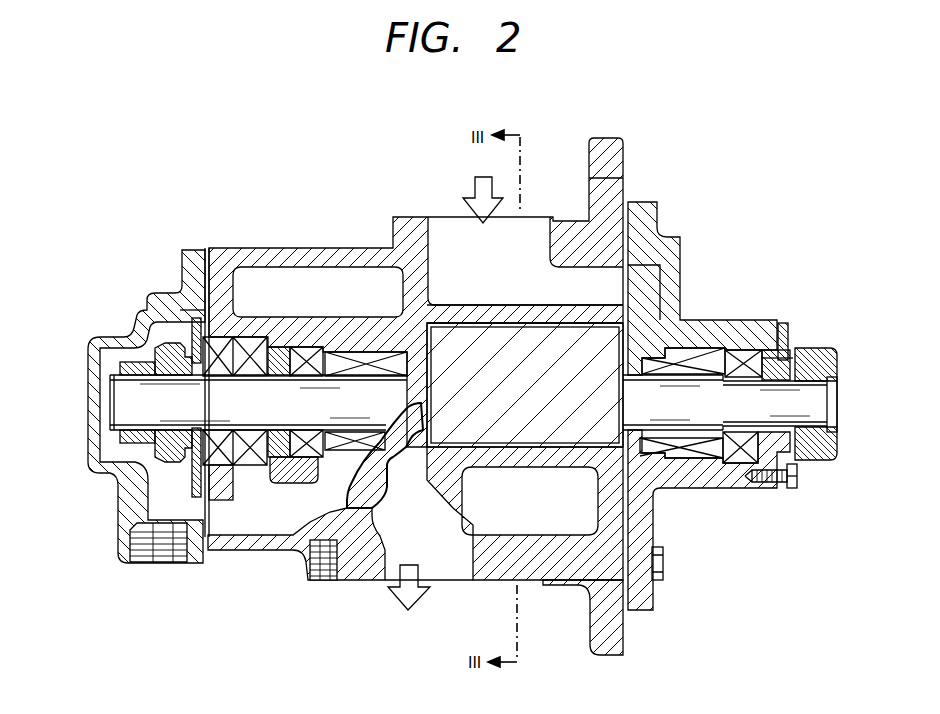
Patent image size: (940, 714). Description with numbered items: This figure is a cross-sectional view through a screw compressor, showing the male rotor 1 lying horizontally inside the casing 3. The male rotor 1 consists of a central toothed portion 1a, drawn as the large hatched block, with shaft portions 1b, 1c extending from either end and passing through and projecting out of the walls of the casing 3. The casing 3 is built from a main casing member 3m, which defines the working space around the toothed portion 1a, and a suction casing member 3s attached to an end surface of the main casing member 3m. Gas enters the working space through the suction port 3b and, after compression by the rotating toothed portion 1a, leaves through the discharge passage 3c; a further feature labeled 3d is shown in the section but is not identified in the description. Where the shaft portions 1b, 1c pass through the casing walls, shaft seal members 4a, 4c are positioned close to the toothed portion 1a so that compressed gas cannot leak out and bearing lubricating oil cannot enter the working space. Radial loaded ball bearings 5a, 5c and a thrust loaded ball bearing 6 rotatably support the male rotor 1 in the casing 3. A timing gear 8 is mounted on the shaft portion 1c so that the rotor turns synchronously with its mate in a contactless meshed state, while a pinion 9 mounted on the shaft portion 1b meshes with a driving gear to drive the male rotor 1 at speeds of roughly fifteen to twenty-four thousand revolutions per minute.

The male rotor 1 is at (470, 354).
The toothed portion 1a is at (531, 340).
The shaft portion 1b is at (823, 408).
The shaft portion 1c is at (110, 403).
The casing 3 is at (570, 588).
The suction port 3b is at (635, 340).
The discharge passage 3c is at (373, 582).
The rib of housing 3d is at (423, 445).
The main casing member 3m is at (600, 577).
The suction casing member 3s is at (722, 490).
The shaft seal member 4a is at (692, 348).
The shaft seal member 4c is at (372, 352).
The radial loaded ball bearing 5a is at (745, 350).
The radial loaded ball bearing 5c is at (305, 346).
The thrust loaded ball bearing 6 is at (220, 343).
The timing gear 8 is at (100, 335).
The pinion 9 is at (840, 362).